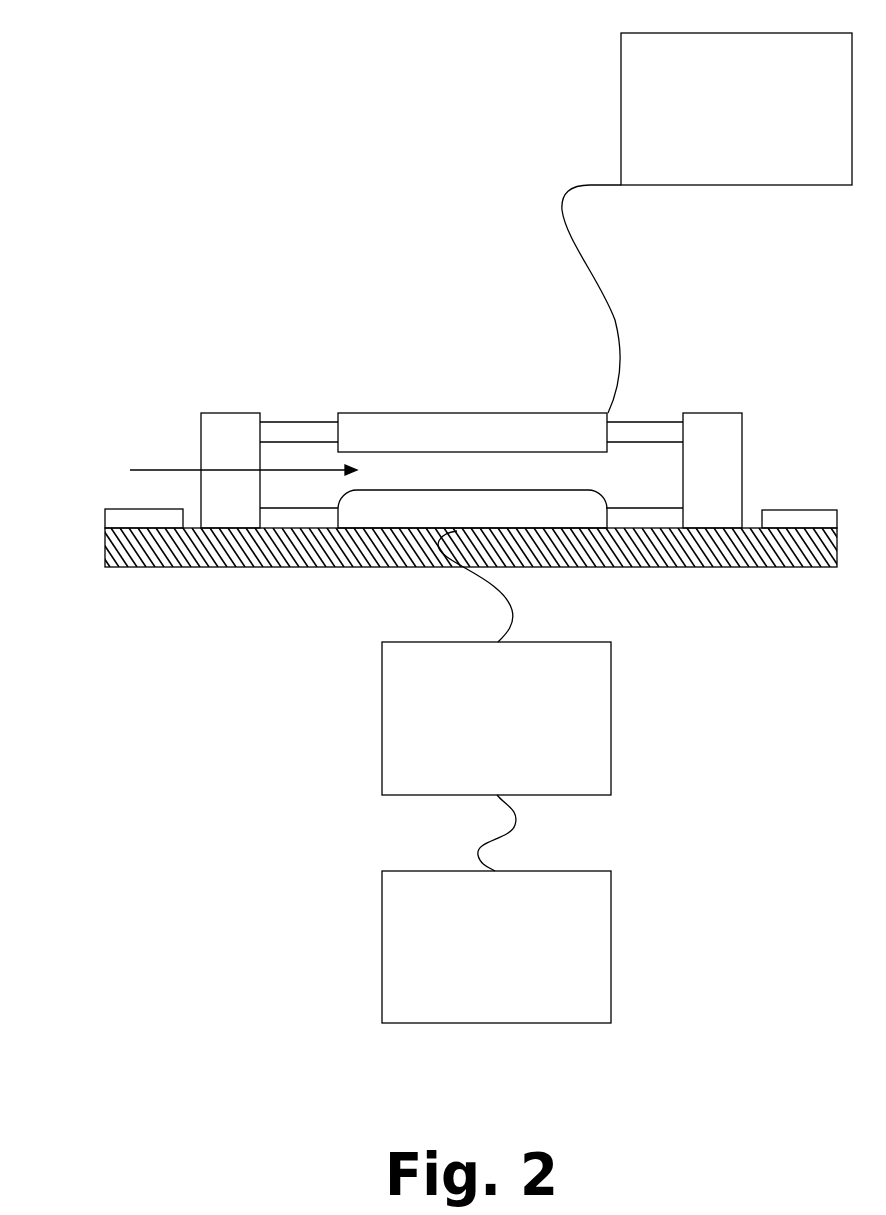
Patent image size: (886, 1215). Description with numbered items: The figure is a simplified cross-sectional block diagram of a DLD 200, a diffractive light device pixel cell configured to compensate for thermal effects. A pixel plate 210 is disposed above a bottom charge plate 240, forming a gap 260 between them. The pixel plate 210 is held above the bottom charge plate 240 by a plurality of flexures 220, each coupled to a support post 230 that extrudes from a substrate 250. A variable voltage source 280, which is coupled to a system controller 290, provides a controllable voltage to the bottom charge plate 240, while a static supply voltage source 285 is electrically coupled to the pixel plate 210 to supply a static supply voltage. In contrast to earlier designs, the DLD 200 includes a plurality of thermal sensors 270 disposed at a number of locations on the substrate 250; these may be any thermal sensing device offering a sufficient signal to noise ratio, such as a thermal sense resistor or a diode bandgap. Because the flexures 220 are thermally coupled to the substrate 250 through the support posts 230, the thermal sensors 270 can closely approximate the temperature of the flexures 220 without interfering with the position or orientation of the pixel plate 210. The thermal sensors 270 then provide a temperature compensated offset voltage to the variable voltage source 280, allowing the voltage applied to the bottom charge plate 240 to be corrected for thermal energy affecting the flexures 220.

The DLD 200 is at (458, 188).
The pixel plate 210 is at (470, 413).
The flexures 220 is at (298, 423).
The support post 230 is at (201, 450).
The bottom charge plate 240 is at (472, 509).
The substrate 250 is at (375, 567).
The gap 260 is at (218, 470).
The thermal sensors 270 is at (105, 522).
The variable voltage source 280 is at (496, 701).
The static supply voltage source 285 is at (707, 223).
The system controller 290 is at (496, 947).